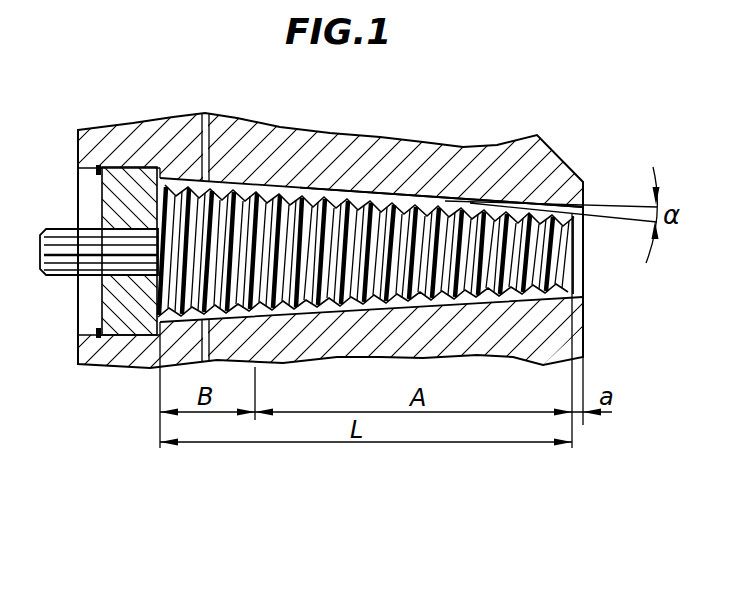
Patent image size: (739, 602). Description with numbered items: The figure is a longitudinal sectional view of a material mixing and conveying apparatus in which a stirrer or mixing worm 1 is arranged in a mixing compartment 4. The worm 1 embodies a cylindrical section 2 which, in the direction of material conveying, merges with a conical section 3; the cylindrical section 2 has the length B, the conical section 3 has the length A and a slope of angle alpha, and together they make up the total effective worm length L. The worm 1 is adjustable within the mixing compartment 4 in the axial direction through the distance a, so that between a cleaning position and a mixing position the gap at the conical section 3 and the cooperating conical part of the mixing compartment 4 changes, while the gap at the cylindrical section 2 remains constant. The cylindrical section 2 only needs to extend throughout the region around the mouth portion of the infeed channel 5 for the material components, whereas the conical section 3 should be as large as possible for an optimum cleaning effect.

The worm 1 is at (65, 233).
The cylindrical section 2 is at (238, 198).
The conical section 3 is at (402, 200).
The mixing compartment 4 is at (448, 200).
The infeed channel 5 is at (205, 128).